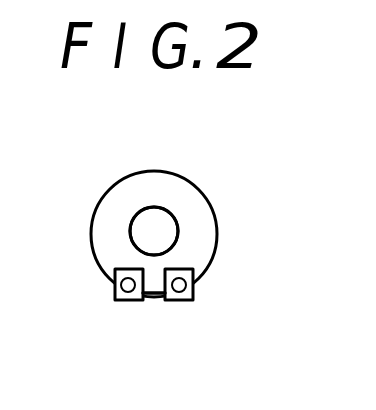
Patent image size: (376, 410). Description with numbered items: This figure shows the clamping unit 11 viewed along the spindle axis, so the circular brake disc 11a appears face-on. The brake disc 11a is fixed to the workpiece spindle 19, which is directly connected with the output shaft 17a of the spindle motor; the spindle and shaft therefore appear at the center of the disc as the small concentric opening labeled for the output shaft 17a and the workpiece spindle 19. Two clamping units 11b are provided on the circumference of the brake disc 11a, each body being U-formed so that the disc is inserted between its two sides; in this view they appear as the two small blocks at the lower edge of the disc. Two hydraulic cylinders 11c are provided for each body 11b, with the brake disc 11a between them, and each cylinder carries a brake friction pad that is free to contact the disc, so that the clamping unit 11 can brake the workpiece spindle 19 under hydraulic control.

The clamping unit 11 is at (163, 232).
The brake disc 11a is at (182, 180).
The clamping units 11b is at (115, 303).
The hydraulic cylinders 11c is at (121, 286).
The output shaft 17a is at (148, 218).
The workpiece spindle 19 is at (154, 231).